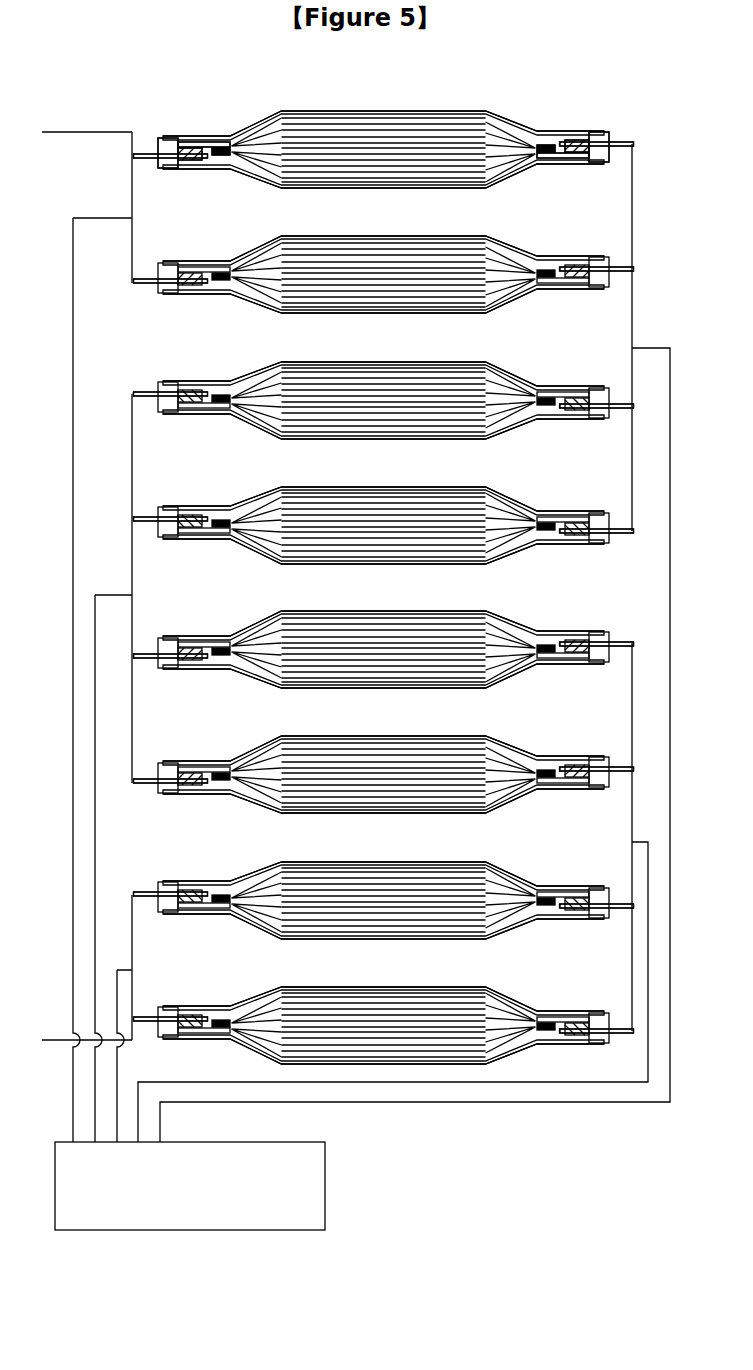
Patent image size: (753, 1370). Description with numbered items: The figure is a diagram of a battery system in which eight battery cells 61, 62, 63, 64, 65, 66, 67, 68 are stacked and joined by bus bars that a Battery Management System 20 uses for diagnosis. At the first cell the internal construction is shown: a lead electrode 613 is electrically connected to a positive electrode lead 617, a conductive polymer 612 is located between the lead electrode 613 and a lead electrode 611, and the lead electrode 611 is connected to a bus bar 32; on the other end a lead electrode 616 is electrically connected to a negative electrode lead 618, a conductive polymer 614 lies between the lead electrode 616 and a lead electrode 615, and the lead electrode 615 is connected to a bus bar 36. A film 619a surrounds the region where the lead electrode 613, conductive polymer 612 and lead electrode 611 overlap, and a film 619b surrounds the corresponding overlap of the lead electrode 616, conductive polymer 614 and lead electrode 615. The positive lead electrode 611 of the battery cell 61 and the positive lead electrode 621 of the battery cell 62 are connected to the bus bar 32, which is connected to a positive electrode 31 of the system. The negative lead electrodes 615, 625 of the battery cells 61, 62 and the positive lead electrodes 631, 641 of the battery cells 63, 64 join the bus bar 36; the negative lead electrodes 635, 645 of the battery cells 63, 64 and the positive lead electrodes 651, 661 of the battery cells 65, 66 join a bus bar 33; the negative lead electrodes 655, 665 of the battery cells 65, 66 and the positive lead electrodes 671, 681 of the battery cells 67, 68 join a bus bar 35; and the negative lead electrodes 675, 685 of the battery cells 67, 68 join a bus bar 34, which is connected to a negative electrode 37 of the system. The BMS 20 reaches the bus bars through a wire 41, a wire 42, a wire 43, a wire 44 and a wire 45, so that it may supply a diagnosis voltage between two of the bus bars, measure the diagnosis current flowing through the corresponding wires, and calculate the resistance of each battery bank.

The Battery Management System 20 is at (325, 1187).
The positive electrode 31 is at (83, 130).
The bus bar 32 is at (132, 248).
The bus bar 33 is at (132, 468).
The bus bar 34 is at (132, 945).
The bus bar 35 is at (632, 940).
The bus bar 36 is at (632, 207).
The negative electrode 37 is at (50, 1038).
The wire 41 is at (97, 217).
The wire 42 is at (95, 594).
The wire 43 is at (117, 968).
The wire 44 is at (648, 841).
The wire 45 is at (655, 347).
The battery cell 61 is at (262, 118).
The battery cell 62 is at (262, 244).
The battery cell 63 is at (262, 370).
The battery cell 64 is at (262, 495).
The battery cell 65 is at (262, 620).
The battery cell 66 is at (262, 745).
The battery cell 67 is at (262, 870).
The battery cell 68 is at (262, 995).
The lead electrode 611 is at (148, 160).
The conductive polymer 612 is at (192, 161).
The lead electrode 613 is at (214, 141).
The conductive polymer 614 is at (577, 140).
The lead electrode 615 is at (616, 140).
The lead electrode 616 is at (548, 159).
The positive electrode lead 617 is at (222, 156).
The negative electrode lead 618 is at (548, 145).
The film 619a is at (160, 137).
The film 619b is at (600, 163).
The lead electrode 621 is at (148, 285).
The lead electrode 625 is at (618, 266).
The lead electrode 631 is at (618, 403).
The lead electrode 635 is at (150, 391).
The lead electrode 641 is at (620, 528).
The lead electrode 645 is at (148, 523).
The lead electrode 651 is at (150, 652).
The lead electrode 655 is at (620, 641).
The lead electrode 661 is at (150, 777).
The lead electrode 665 is at (620, 766).
The lead electrode 671 is at (620, 903).
The lead electrode 675 is at (150, 891).
The lead electrode 681 is at (620, 1028).
The lead electrode 685 is at (148, 1024).